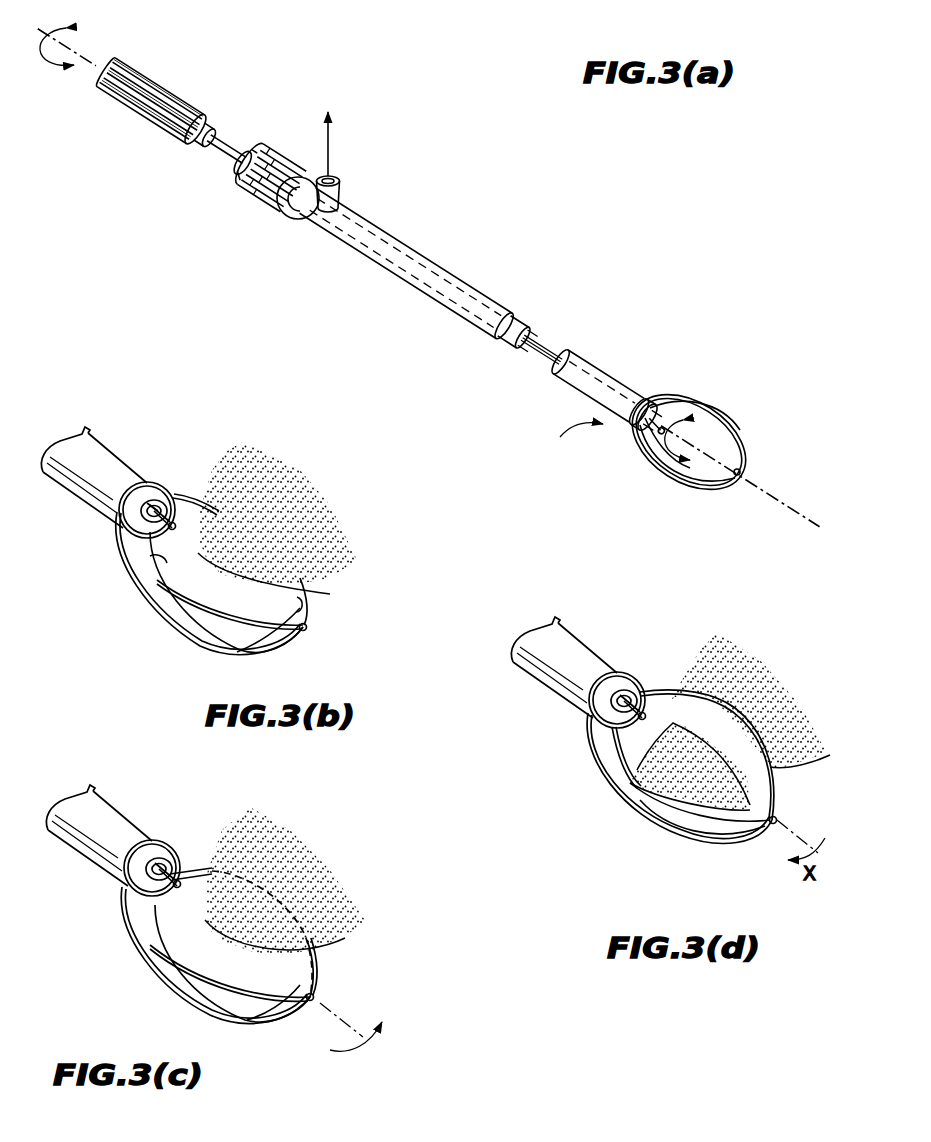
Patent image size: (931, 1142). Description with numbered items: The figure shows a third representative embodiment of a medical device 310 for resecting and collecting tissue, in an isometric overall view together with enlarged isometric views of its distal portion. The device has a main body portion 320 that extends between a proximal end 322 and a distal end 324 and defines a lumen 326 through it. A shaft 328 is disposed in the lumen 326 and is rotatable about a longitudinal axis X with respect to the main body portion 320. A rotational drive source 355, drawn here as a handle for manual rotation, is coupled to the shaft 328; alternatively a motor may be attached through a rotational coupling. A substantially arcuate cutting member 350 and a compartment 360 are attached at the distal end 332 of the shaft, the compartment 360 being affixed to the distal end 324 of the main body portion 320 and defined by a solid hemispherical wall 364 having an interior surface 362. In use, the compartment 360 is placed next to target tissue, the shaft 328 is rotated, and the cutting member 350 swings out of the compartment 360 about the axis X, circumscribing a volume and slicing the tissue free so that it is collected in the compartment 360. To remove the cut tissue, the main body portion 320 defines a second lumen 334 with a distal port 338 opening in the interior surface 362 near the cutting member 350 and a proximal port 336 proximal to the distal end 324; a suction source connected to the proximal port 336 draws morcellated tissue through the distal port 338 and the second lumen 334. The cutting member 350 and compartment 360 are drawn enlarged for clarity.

In FIG. 3A, the medical device 310 is at (575, 223).
In FIG. 3A, the main body portion 320 is at (425, 262).
In FIG. 3B, the main body portion 320 is at (110, 440).
In FIG. 3C, the main body portion 320 is at (123, 813).
In FIG. 3D, the main body portion 320 is at (580, 653).
In FIG. 3A, the proximal end 322 is at (203, 86).
In FIG. 3A, the distal end 324 is at (566, 444).
In FIG. 3A, the lumen 326 is at (189, 148).
In FIG. 3A, the shaft 328 is at (222, 150).
In FIG. 3B, the shaft 328 is at (119, 520).
In FIG. 3C, the shaft 328 is at (130, 917).
In FIG. 3A, the distal end of the shaft 332 is at (497, 337).
In FIG. 3A, the second lumen 334 is at (340, 190).
In FIG. 3A, the proximal port 336 is at (334, 177).
In FIG. 3A, the distal port 338 is at (520, 331).
In FIG. 3B, the distal port 338 is at (158, 503).
In FIG. 3A, the cutting member 350 is at (652, 470).
In FIG. 3B, the cutting member 350 is at (122, 562).
In FIG. 3C, the cutting member 350 is at (205, 868).
In FIG. 3D, the cutting member 350 is at (633, 753).
In FIG. 3A, the rotational drive source 355 is at (127, 104).
In FIG. 3A, the compartment 360 is at (750, 394).
In FIG. 3B, the compartment 360 is at (175, 626).
In FIG. 3C, the compartment 360 is at (163, 987).
In FIG. 3D, the compartment 360 is at (643, 825).
In FIG. 3A, the interior surface 362 is at (697, 484).
In FIG. 3B, the interior surface 362 is at (297, 600).
In FIG. 3D, the interior surface 362 is at (660, 717).
In FIG. 3A, the solid hemispherical wall 364 is at (680, 393).
In FIG. 3D, the solid hemispherical wall 364 is at (707, 833).